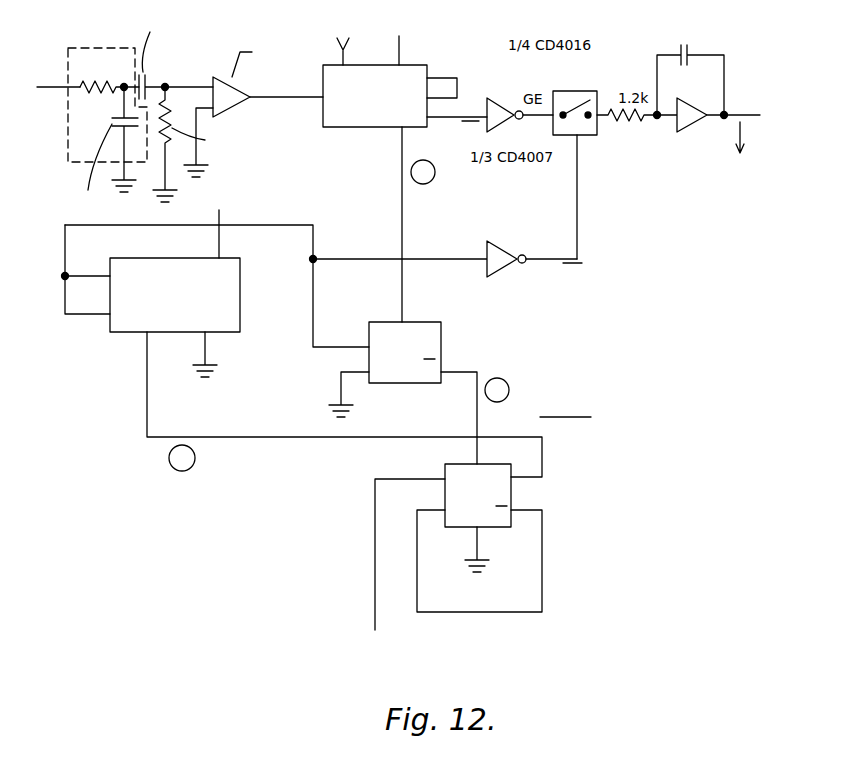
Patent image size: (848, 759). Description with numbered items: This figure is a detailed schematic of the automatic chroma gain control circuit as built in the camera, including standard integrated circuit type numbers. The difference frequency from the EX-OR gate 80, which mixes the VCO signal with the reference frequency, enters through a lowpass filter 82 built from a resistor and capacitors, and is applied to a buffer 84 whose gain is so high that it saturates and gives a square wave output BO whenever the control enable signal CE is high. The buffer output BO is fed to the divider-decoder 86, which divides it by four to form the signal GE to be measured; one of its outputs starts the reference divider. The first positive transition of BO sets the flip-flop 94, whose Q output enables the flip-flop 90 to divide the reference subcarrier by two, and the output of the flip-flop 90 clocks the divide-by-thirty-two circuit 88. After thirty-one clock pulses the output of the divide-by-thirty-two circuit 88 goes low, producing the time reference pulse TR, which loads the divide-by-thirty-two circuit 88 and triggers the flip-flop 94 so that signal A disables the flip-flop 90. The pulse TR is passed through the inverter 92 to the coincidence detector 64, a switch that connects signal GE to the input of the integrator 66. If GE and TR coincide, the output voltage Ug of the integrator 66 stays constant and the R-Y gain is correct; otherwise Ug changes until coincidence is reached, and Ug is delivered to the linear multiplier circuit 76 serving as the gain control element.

The EX-OR gate 80 is at (50, 87).
The lowpass filter 82 is at (68, 164).
The buffer 84 is at (240, 108).
The divider-decoder 86 is at (350, 128).
The divide-by-32 circuit 88 is at (240, 316).
The flip-flop 90 is at (500, 528).
The inverter 92 is at (502, 247).
The flip-flop 94 is at (403, 384).
The coincidence detector 64 is at (588, 137).
The integrator 66 is at (689, 97).
The linear multiplier circuit 76 is at (769, 130).